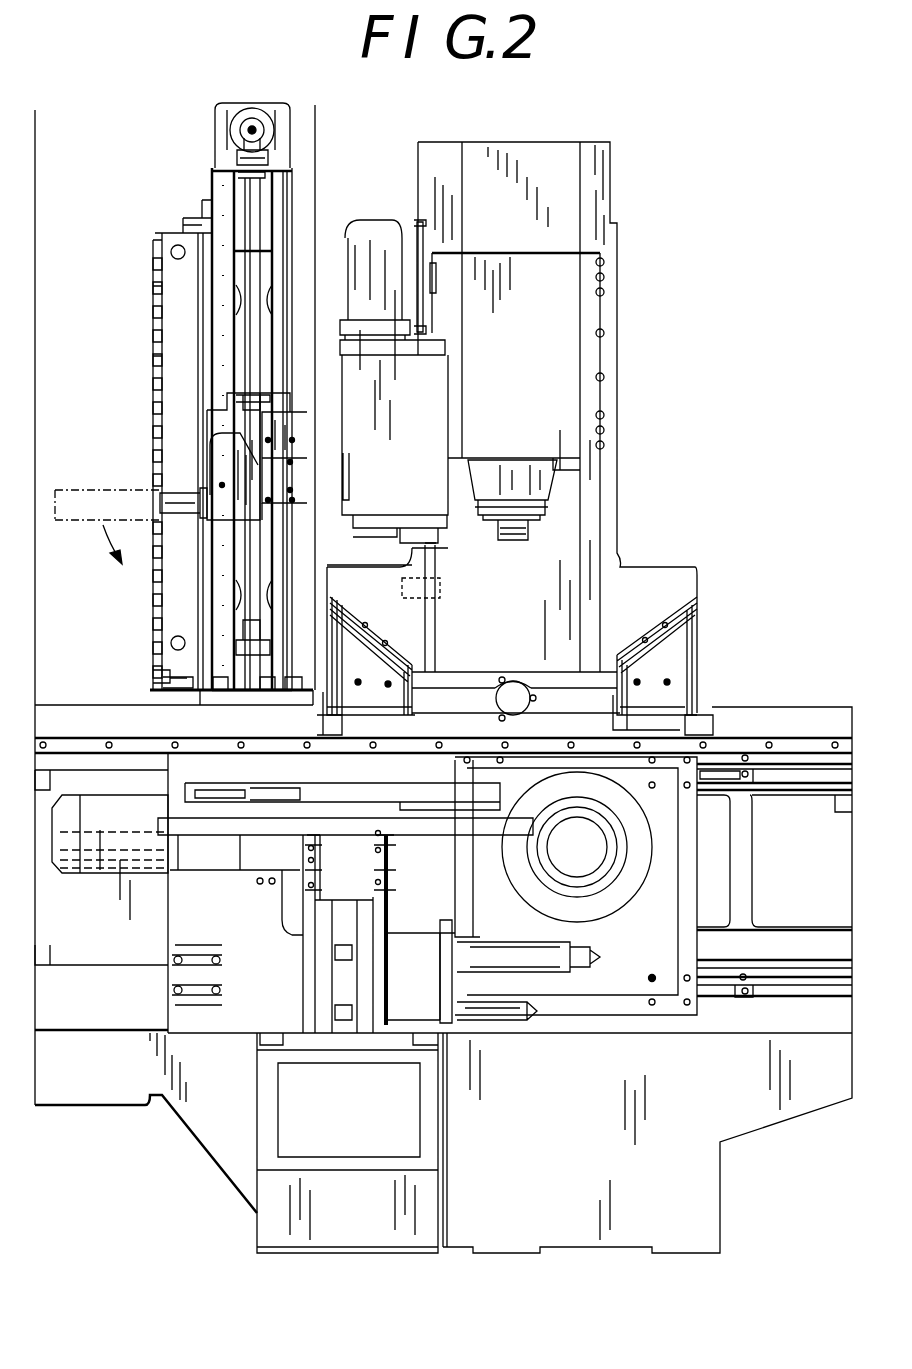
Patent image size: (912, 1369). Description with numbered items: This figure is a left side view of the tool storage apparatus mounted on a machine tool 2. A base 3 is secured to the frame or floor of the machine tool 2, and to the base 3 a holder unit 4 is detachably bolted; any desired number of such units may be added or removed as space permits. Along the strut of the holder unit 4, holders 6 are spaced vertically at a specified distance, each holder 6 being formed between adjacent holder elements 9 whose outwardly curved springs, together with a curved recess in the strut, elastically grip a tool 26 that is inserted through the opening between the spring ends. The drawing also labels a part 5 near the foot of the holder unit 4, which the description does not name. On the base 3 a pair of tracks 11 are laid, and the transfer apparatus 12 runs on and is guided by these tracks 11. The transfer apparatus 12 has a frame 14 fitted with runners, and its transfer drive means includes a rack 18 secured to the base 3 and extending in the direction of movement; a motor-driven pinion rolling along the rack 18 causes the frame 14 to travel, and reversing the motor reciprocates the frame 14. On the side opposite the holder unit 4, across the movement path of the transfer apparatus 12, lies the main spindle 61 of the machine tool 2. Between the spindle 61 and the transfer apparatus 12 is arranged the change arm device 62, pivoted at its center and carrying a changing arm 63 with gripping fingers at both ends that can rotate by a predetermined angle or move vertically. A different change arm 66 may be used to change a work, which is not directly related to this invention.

The machine tool 2 is at (733, 708).
The base 3 is at (82, 712).
The holder unit 4 is at (172, 240).
The guide member 5 is at (175, 678).
The holder 6 is at (153, 290).
The holder element 9 is at (153, 262).
The tracks 11 is at (222, 692).
The transfer apparatus 12 is at (294, 182).
The frame 14 is at (215, 572).
The rack 18 is at (268, 692).
The tool 26 is at (100, 490).
The main spindle 61 is at (568, 490).
The change arm device 62 is at (455, 392).
The changing arm 63 is at (435, 538).
The change arm 66 is at (275, 790).